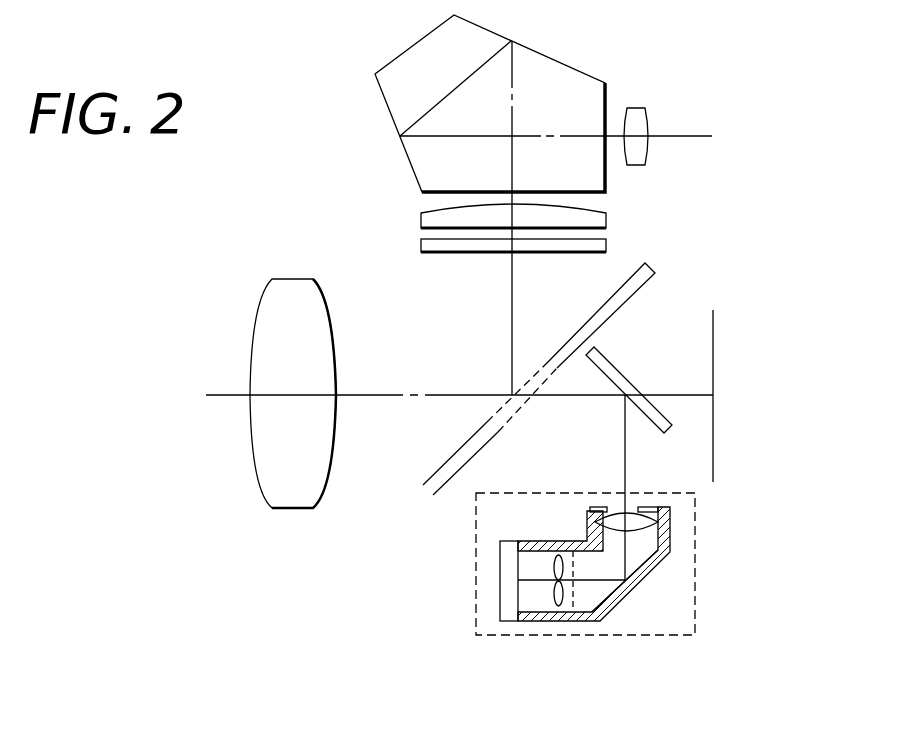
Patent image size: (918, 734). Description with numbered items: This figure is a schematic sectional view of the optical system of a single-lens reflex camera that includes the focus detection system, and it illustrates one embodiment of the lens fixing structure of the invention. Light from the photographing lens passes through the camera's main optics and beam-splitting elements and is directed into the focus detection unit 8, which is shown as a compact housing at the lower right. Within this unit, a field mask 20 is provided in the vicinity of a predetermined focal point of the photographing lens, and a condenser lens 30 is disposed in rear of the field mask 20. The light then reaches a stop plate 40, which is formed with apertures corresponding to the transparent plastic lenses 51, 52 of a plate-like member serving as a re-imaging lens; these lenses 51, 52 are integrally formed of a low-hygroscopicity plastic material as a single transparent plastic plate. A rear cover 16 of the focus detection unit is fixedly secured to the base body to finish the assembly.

The focus detection unit 8 is at (695, 573).
The rear cover 16 is at (507, 578).
The field mask 20 is at (641, 509).
The condenser lens 30 is at (648, 531).
The stop plate 40 is at (572, 604).
The transparent plastic lens 51 is at (554, 567).
The transparent plastic lens 52 is at (554, 597).